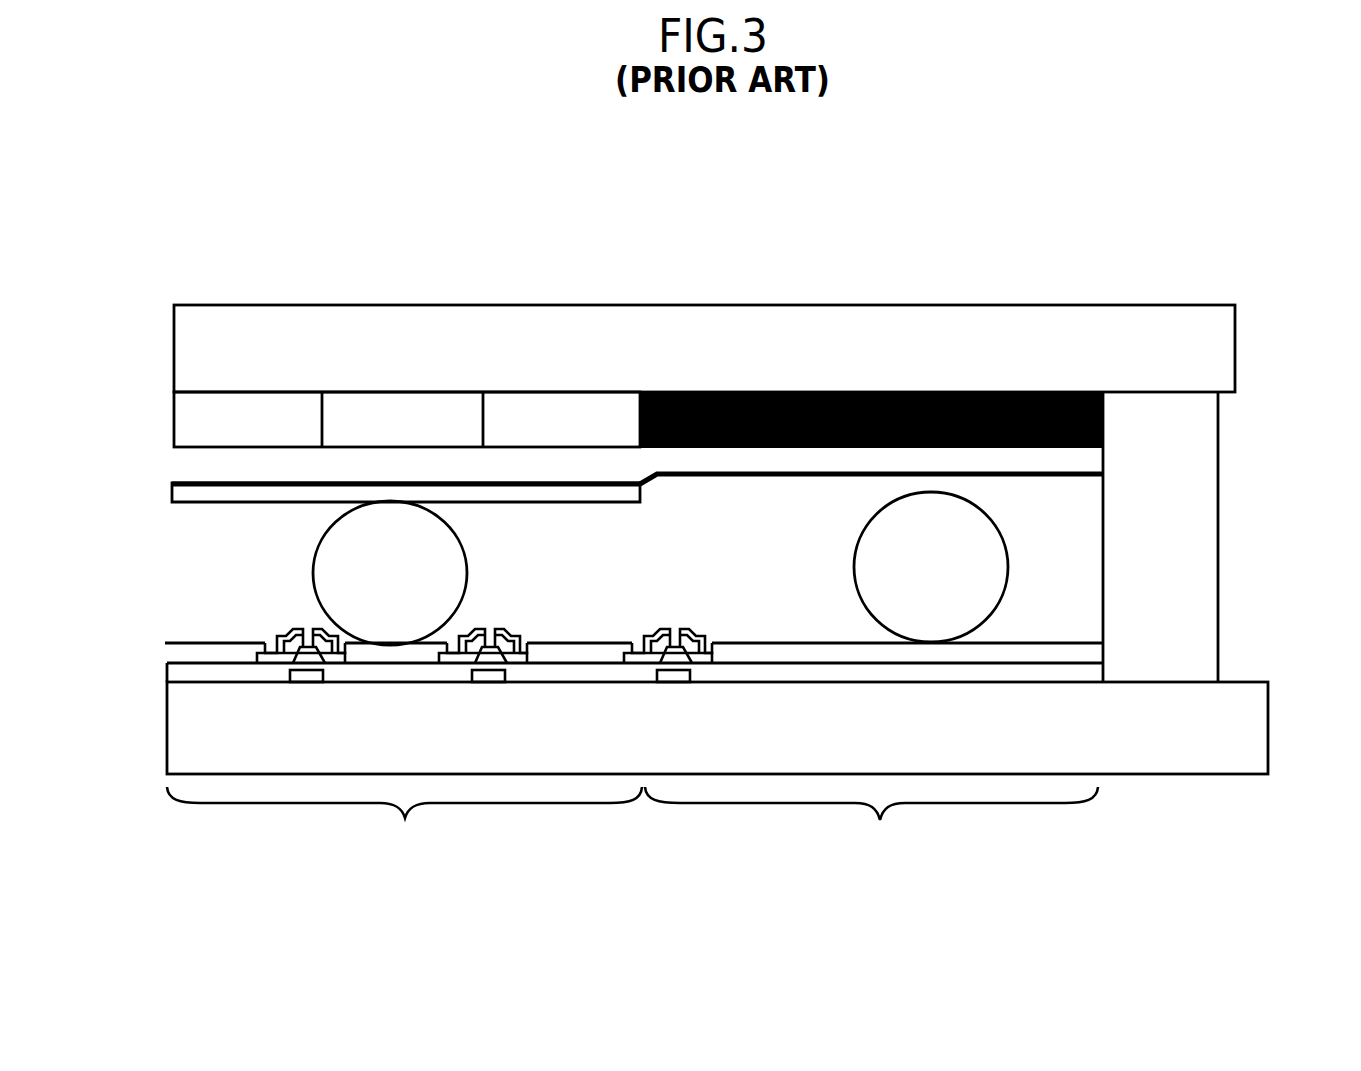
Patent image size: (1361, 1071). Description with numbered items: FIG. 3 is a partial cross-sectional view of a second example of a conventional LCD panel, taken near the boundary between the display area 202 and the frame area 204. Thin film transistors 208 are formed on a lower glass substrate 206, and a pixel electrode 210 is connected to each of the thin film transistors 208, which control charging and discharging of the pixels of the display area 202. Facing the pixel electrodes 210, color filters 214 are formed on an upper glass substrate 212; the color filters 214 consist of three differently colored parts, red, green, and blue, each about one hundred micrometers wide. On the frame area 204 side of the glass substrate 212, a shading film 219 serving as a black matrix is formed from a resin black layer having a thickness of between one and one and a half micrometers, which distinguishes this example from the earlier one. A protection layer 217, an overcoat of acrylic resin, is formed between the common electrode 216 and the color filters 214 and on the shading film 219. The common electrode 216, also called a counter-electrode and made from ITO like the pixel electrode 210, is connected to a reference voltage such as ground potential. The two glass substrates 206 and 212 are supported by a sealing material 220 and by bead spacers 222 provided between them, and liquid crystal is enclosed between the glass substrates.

The display area 202 is at (404, 824).
The frame area 204 is at (871, 823).
The glass substrate 206 is at (1268, 742).
The thin film transistor 208 is at (680, 618).
The pixel electrode 210 is at (227, 632).
The glass substrate 212 is at (1235, 358).
The color filter 214 is at (255, 378).
The common electrode 216 is at (243, 503).
The protection layer 217 is at (760, 476).
The shading film 219 is at (740, 378).
The sealing material 220 is at (1218, 530).
The bead spacer 222 is at (500, 548).